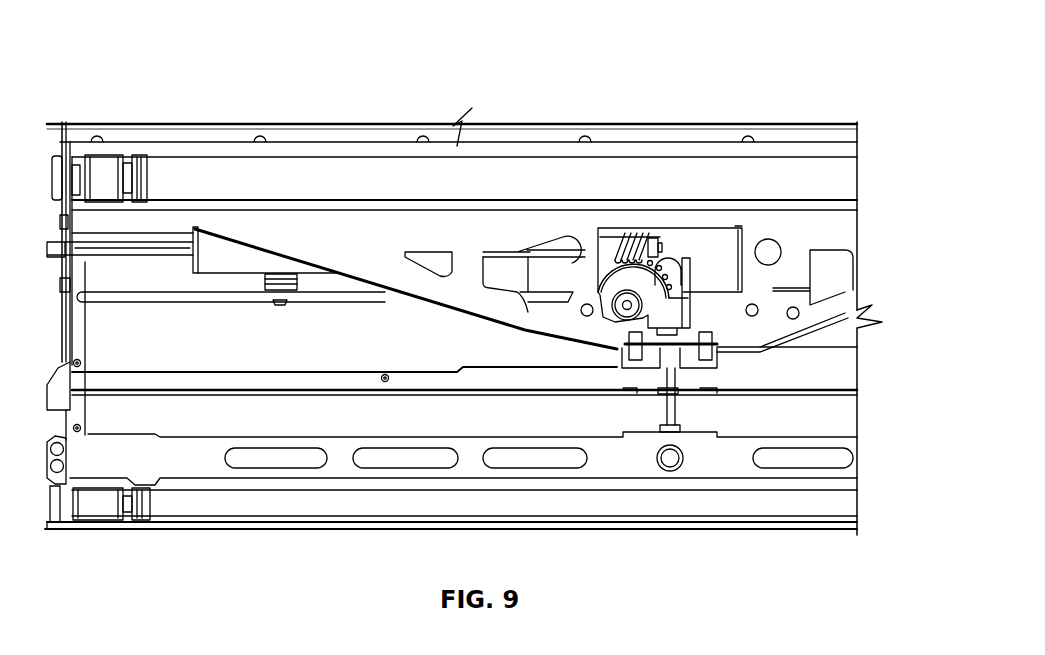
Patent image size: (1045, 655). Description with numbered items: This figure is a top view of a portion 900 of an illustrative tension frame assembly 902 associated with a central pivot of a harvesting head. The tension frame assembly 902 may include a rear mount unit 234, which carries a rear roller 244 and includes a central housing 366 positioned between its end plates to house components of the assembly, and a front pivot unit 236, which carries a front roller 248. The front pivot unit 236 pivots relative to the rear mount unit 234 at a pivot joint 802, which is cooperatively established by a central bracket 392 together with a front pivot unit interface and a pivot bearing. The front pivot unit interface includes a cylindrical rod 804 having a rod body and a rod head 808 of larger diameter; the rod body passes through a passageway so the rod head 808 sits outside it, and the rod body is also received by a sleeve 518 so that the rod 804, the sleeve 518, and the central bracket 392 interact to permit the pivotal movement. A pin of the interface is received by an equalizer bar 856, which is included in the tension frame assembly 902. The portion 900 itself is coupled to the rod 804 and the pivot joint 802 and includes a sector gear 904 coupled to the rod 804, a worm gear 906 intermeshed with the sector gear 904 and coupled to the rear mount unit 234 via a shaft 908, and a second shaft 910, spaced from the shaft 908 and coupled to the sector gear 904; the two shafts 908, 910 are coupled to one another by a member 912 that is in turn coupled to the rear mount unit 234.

The rear mount unit 234 is at (837, 148).
The front pivot unit 236 is at (830, 503).
The rear roller 244 is at (717, 177).
The front roller 248 is at (247, 516).
The central housing 366 is at (733, 317).
The central bracket 392 is at (810, 372).
The sleeve 518 is at (650, 375).
The pivot joint 802 is at (672, 356).
The cylindrical rod 804 is at (667, 414).
The rod head 808 is at (682, 420).
The equalizer bar 856 is at (693, 462).
The portion of tension frame assembly 900 is at (605, 48).
The tension frame assembly 902 is at (527, 95).
The sector gear 904 is at (645, 293).
The worm gear 906 is at (627, 232).
The shaft 908 is at (135, 245).
The shaft 910 is at (183, 296).
The member 912 is at (245, 267).